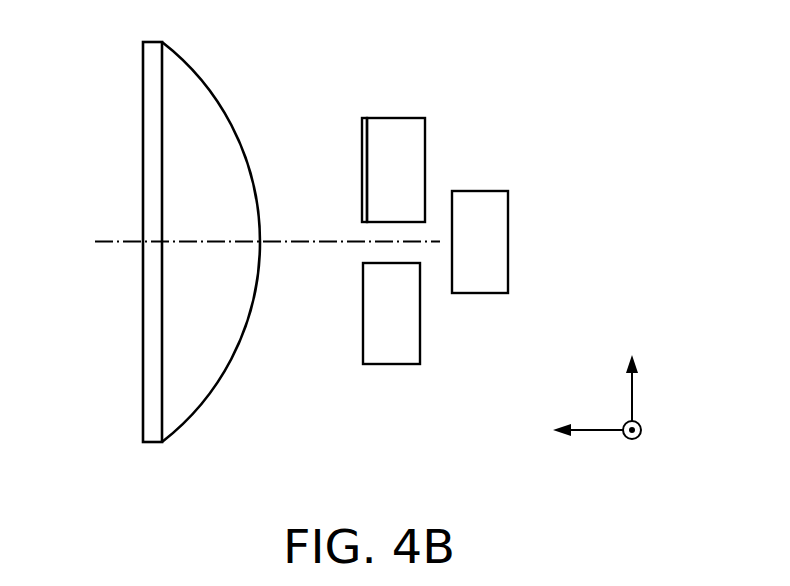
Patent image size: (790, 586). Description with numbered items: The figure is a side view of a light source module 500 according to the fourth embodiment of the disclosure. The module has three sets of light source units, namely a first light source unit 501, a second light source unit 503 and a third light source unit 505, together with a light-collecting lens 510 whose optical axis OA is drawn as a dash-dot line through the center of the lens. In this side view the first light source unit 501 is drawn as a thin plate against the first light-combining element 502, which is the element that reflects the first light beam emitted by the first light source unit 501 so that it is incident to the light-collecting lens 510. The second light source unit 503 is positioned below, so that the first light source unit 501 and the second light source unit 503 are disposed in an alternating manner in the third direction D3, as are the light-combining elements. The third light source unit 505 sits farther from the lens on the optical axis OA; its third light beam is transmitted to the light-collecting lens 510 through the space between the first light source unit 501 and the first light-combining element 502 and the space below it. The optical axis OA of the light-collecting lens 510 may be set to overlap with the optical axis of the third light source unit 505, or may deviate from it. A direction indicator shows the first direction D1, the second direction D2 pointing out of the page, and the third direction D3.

The light source module 500 is at (627, 41).
The light-collecting lens 510 is at (181, 72).
The optical axis OA is at (97, 243).
The first light source unit 501 is at (364, 117).
The first light-combining element 502 is at (403, 122).
The second light source unit 503 is at (396, 355).
The third light source unit 505 is at (500, 237).
The first direction D1 is at (573, 433).
The second direction D2 is at (631, 451).
The third direction D3 is at (633, 370).